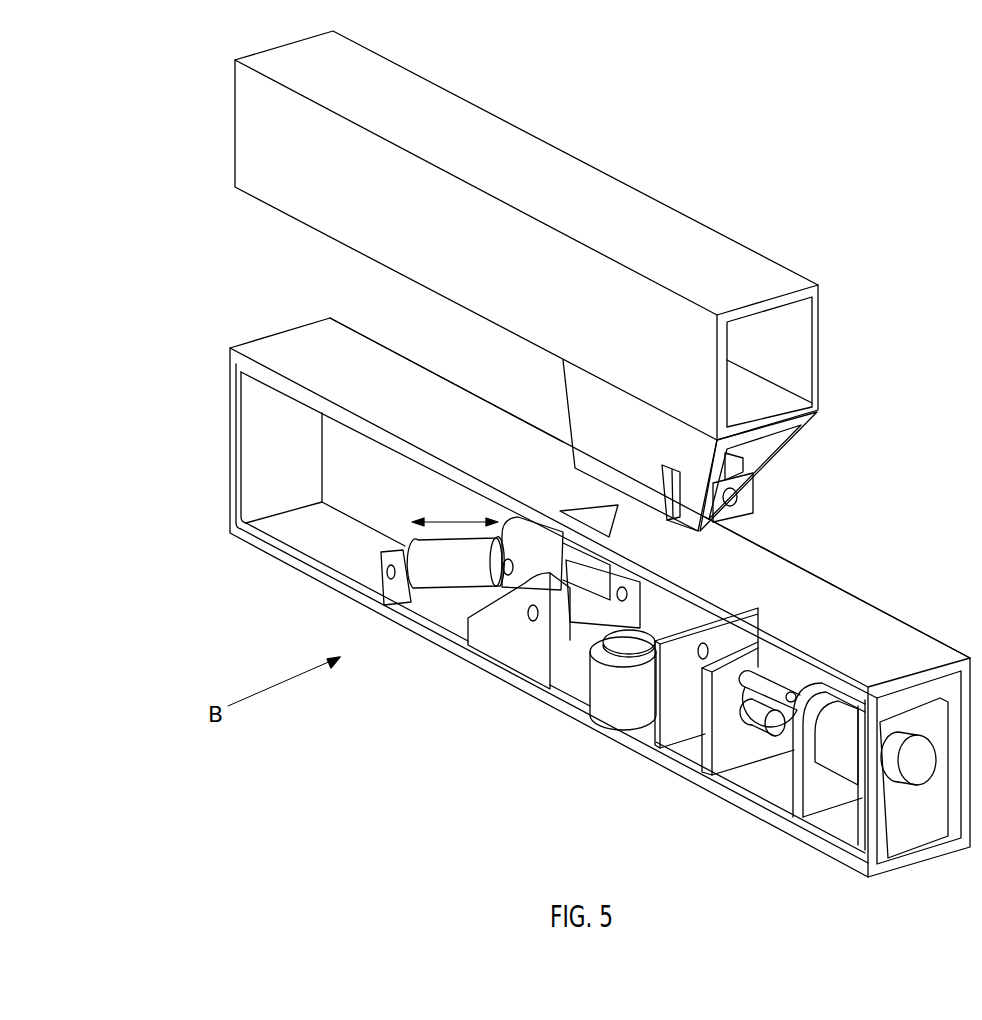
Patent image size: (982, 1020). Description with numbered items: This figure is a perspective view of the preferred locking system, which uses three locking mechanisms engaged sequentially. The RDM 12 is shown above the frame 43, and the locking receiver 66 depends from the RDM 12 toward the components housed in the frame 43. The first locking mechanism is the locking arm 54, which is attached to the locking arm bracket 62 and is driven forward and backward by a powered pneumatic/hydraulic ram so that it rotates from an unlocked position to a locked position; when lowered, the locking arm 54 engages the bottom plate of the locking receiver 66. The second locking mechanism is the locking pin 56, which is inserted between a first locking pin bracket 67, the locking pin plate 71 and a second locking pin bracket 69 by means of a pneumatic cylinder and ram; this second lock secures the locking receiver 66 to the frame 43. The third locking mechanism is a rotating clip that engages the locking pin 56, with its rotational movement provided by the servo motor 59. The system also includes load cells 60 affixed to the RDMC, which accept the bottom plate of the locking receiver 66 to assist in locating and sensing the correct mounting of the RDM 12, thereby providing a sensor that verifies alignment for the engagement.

The RDM 12 is at (692, 212).
The frame 43 is at (283, 562).
The locking arm 54 is at (533, 543).
The locking pin 56 is at (767, 683).
The servo motor 59 is at (757, 735).
The load cell 60 is at (625, 643).
The locking arm bracket 62 is at (507, 628).
The locking receiver 66 is at (803, 435).
The first locking pin bracket 67 is at (743, 745).
The second locking pin bracket 69 is at (677, 707).
The locking pin plate 71 is at (758, 486).